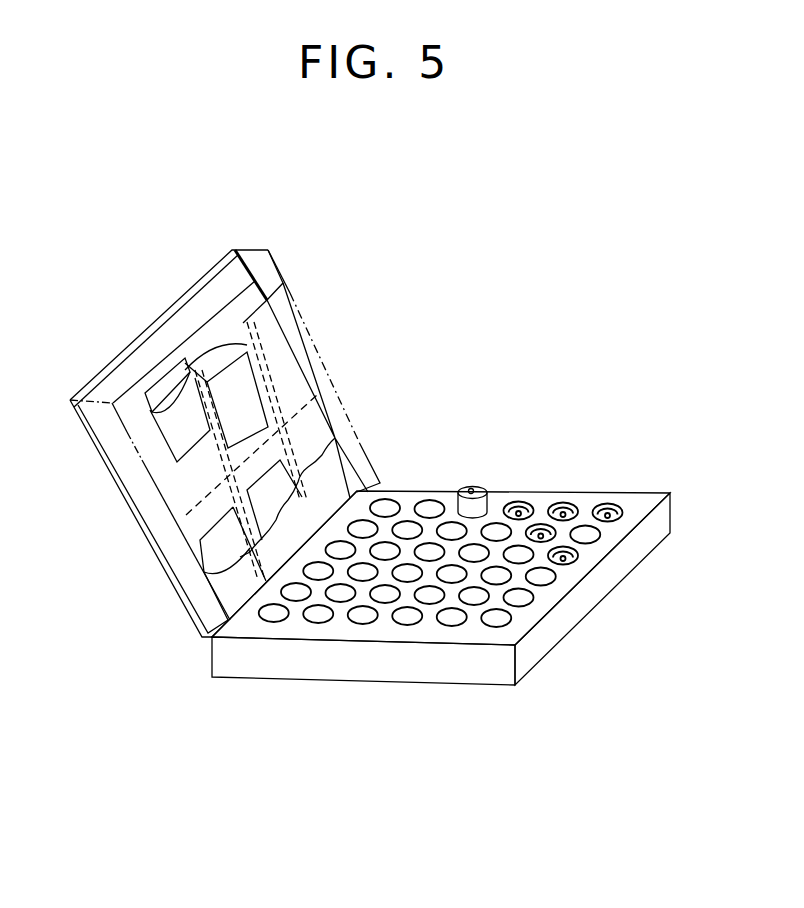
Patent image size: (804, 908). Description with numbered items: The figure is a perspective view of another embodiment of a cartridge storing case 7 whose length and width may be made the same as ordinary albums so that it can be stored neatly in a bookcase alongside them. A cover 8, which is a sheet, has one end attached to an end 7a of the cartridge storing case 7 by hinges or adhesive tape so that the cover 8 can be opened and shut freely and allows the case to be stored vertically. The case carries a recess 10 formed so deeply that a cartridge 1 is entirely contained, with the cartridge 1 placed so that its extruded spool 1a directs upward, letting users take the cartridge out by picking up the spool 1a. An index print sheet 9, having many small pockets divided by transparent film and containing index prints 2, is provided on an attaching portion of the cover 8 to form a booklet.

The cartridge 1 is at (521, 503).
The spool 1a is at (476, 488).
The index print 2 is at (170, 381).
The cartridge storing case 7 is at (467, 665).
The end of the cartridge storing case 7a is at (238, 595).
The cover 8 is at (143, 537).
The index print sheet 9 is at (297, 363).
The recess 10 is at (387, 505).